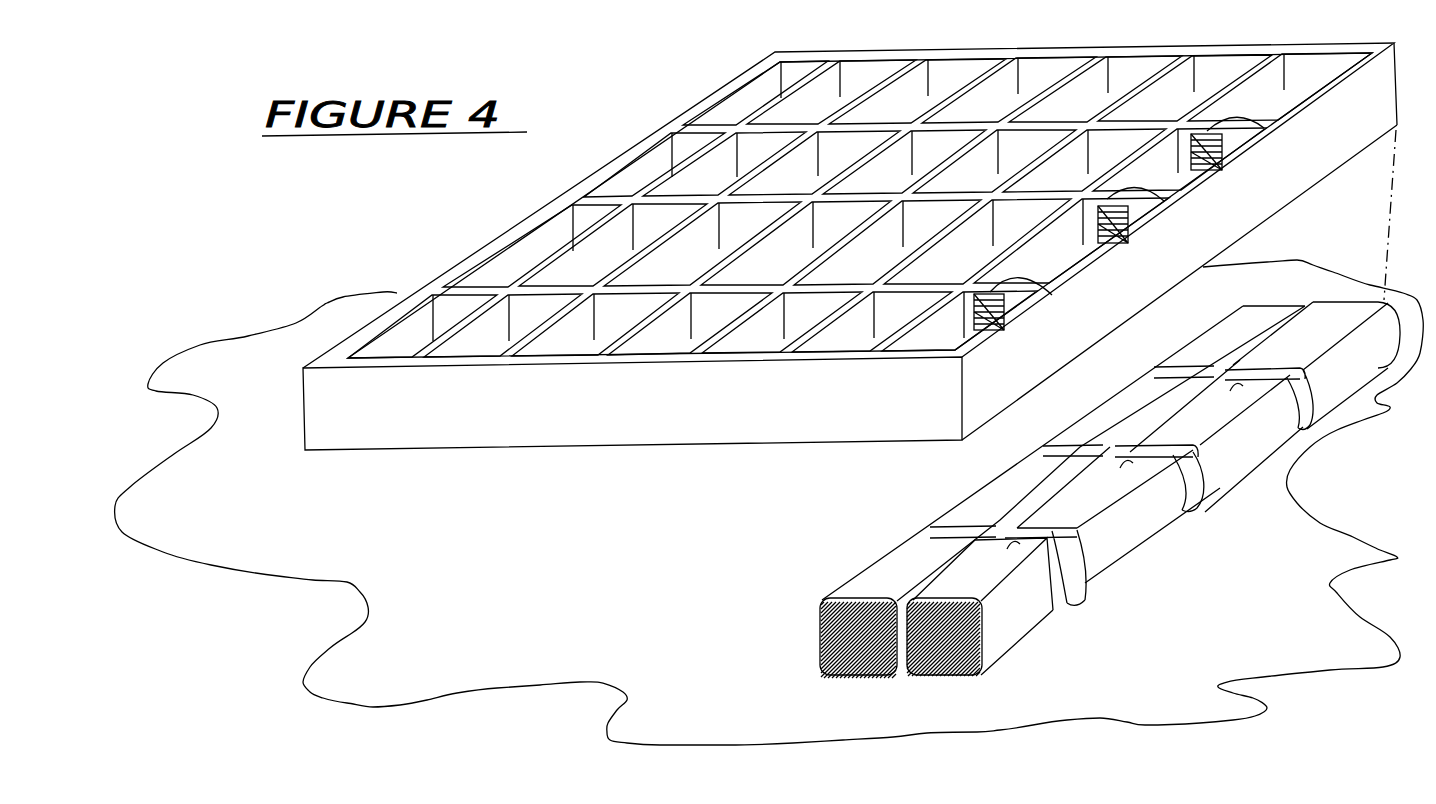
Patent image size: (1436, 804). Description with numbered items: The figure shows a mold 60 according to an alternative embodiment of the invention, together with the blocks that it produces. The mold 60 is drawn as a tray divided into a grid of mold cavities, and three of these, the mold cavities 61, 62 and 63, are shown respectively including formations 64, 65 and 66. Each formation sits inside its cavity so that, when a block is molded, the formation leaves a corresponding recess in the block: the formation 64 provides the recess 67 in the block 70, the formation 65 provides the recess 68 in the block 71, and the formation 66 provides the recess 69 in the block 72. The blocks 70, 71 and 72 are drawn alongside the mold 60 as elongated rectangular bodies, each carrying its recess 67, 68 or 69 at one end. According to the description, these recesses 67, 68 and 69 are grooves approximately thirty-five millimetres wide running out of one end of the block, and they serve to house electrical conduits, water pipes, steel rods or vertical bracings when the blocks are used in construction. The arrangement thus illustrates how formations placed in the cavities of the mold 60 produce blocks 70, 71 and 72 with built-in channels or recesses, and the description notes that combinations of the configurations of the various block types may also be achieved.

The mold 60 is at (728, 425).
The mold cavity 61 is at (1177, 159).
The mold cavity 62 is at (1080, 235).
The mold cavity 63 is at (960, 319).
The formation 64 is at (1052, 296).
The formation 65 is at (1164, 201).
The formation 66 is at (1264, 128).
The recess 67 is at (1058, 600).
The recess 68 is at (1180, 515).
The recess 69 is at (1278, 455).
The block 70 is at (980, 607).
The block 71 is at (1118, 515).
The block 72 is at (1216, 436).